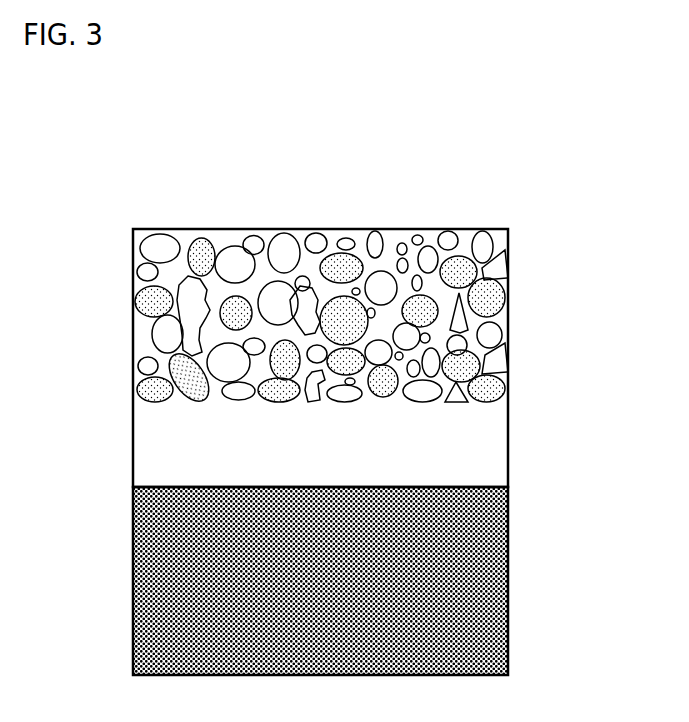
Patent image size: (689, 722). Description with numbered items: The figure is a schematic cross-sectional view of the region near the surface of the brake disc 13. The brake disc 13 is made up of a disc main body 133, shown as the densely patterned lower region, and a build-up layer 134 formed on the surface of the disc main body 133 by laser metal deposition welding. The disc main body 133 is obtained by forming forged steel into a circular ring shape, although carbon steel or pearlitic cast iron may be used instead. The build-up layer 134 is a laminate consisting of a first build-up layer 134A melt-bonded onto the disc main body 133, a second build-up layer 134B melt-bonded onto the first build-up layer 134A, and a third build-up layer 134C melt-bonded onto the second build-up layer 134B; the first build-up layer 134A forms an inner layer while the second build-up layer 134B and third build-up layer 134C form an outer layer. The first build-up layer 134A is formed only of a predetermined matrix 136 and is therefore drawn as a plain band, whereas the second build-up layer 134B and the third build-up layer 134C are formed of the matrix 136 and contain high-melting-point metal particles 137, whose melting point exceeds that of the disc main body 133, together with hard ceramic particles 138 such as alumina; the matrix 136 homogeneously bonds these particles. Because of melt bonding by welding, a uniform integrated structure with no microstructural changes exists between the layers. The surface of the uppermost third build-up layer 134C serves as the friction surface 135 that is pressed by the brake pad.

The brake disc 13 is at (157, 169).
The disc main body 133 is at (511, 577).
The build-up layer 134 is at (402, 314).
The first build-up layer 134A is at (523, 399).
The second build-up layer 134B is at (523, 319).
The third build-up layer 134C is at (523, 233).
The friction surface 135 is at (410, 232).
The matrix 136 is at (304, 232).
The high-melting-point metal particles 137 is at (193, 231).
The hard ceramic particles 138 is at (487, 242).